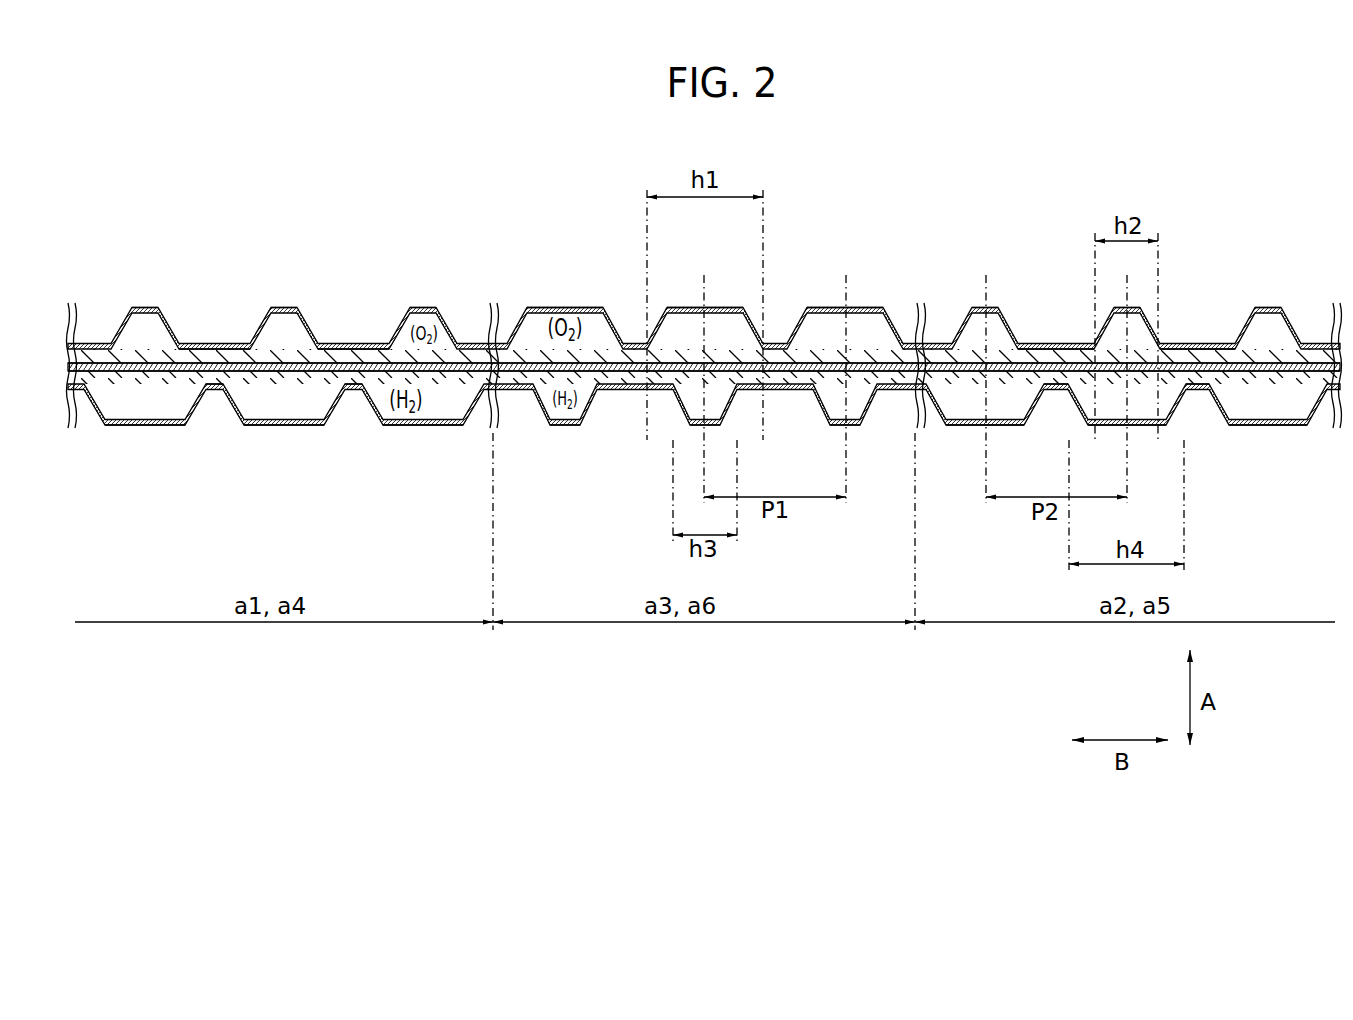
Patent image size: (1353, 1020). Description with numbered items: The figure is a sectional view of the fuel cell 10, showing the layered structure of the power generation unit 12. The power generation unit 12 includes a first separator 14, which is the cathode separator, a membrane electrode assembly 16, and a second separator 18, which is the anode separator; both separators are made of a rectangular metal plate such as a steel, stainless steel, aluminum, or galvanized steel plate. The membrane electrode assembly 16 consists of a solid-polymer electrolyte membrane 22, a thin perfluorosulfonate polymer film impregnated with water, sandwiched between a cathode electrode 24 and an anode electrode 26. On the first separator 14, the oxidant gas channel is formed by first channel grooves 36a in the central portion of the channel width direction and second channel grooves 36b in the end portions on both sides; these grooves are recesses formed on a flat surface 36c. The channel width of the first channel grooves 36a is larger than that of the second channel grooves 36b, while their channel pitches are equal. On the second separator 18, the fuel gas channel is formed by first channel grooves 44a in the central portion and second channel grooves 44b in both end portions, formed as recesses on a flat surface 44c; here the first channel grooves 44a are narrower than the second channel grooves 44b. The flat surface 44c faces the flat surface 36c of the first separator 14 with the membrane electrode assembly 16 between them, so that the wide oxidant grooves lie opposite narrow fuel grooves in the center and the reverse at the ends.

The fuel cell 10 is at (737, 144).
The power generation unit 12 is at (704, 412).
The first separator 14 is at (704, 387).
The membrane electrode assembly 16 is at (704, 443).
The second separator 18 is at (704, 457).
The solid-polymer electrolyte membrane 22 is at (210, 368).
The cathode electrode 24 is at (250, 355).
The anode electrode 26 is at (168, 378).
The first channel grooves 36a is at (855, 318).
The second channel grooves 36b is at (289, 322).
The flat surface 36c is at (338, 353).
The first channel grooves 44a is at (840, 420).
The second channel grooves 44b is at (430, 418).
The flat surface 44c is at (340, 378).